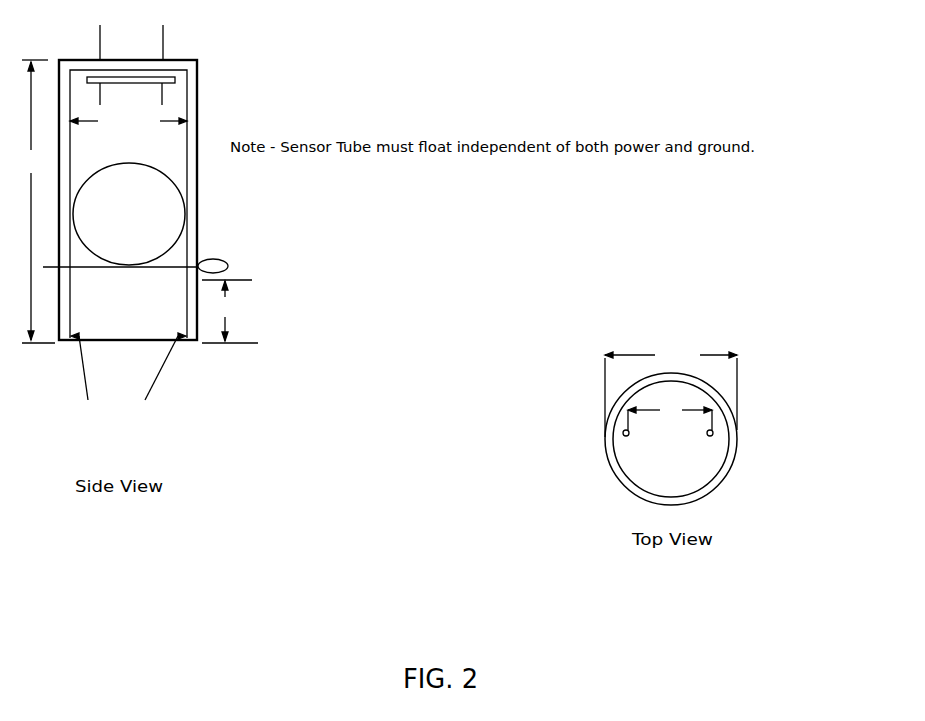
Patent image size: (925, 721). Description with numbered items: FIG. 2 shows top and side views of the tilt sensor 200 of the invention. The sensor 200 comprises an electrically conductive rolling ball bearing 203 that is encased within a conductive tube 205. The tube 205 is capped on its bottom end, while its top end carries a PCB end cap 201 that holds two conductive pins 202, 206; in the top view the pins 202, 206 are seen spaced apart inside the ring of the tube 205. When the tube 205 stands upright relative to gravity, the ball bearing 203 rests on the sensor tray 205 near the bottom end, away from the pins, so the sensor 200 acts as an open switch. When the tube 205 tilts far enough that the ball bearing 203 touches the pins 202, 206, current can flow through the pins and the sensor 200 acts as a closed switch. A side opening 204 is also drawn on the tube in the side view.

The sensor 200 is at (801, 592).
The top end cap 201 is at (182, 65).
The conductive pin 202 is at (170, 80).
The conductive ball bearing 203 is at (147, 212).
The side port 204 is at (233, 261).
The conductive tube 205 is at (193, 302).
The conductive pin 206 is at (162, 48).